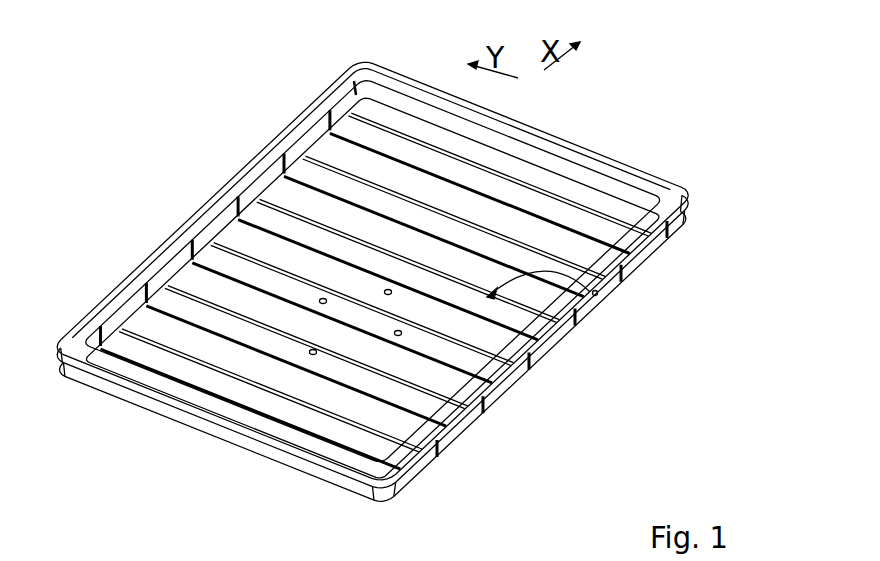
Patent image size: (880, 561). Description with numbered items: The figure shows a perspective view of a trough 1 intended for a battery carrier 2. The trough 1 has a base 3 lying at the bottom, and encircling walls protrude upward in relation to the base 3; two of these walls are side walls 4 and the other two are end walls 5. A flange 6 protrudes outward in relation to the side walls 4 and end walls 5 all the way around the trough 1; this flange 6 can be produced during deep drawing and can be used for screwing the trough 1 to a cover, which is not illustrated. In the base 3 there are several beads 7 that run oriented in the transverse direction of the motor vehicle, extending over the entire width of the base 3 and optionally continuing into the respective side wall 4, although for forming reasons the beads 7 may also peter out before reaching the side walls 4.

The trough 1 is at (362, 284).
The battery carrier 2 is at (362, 262).
The base 3 is at (201, 342).
The side walls 4 is at (88, 345).
The end walls 5 is at (590, 182).
The flange 6 is at (268, 160).
The beads 7 is at (598, 300).